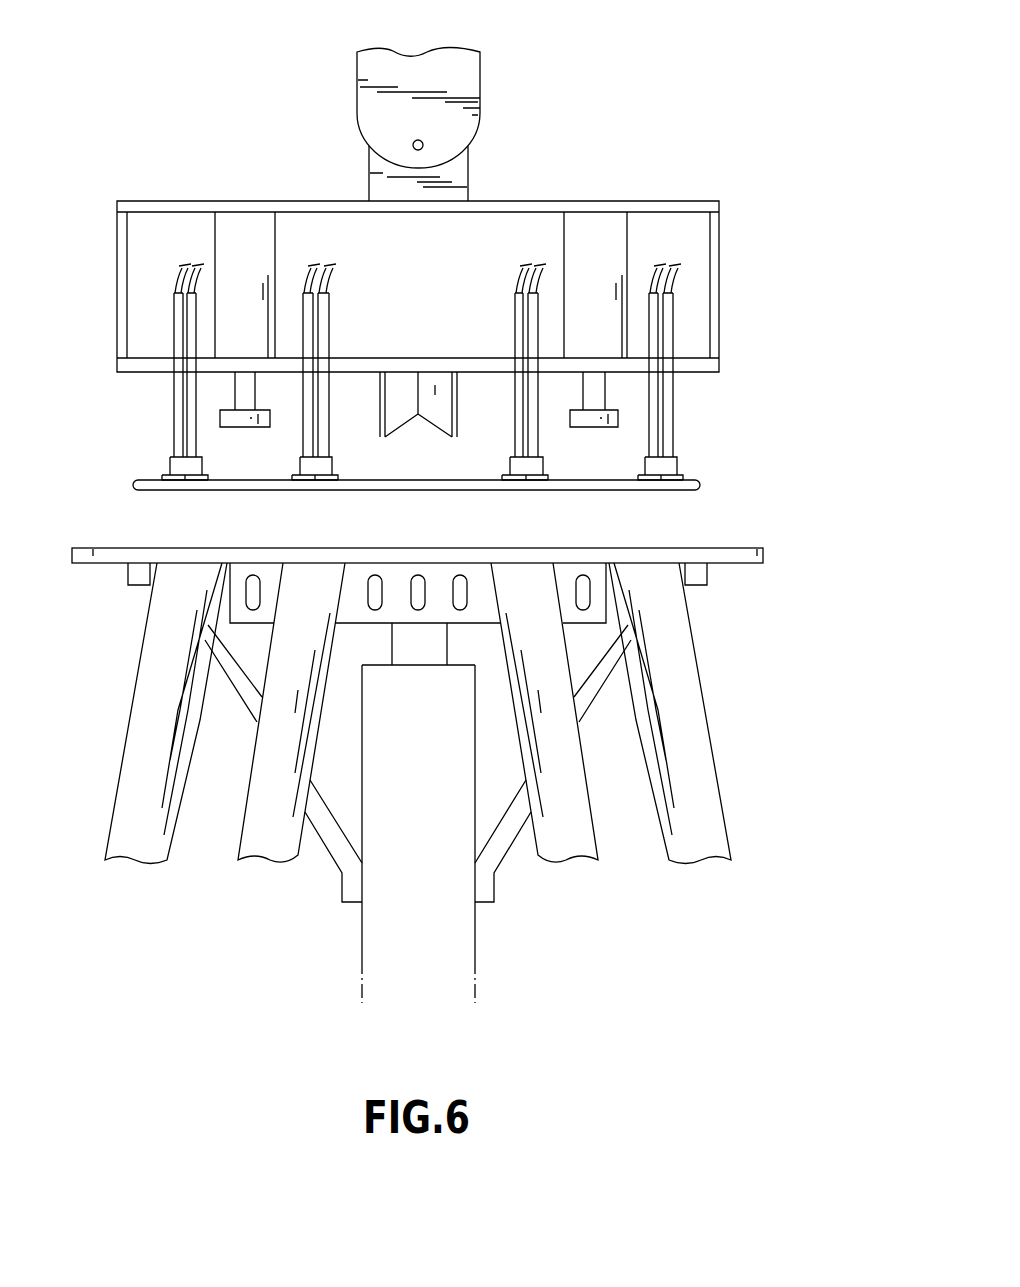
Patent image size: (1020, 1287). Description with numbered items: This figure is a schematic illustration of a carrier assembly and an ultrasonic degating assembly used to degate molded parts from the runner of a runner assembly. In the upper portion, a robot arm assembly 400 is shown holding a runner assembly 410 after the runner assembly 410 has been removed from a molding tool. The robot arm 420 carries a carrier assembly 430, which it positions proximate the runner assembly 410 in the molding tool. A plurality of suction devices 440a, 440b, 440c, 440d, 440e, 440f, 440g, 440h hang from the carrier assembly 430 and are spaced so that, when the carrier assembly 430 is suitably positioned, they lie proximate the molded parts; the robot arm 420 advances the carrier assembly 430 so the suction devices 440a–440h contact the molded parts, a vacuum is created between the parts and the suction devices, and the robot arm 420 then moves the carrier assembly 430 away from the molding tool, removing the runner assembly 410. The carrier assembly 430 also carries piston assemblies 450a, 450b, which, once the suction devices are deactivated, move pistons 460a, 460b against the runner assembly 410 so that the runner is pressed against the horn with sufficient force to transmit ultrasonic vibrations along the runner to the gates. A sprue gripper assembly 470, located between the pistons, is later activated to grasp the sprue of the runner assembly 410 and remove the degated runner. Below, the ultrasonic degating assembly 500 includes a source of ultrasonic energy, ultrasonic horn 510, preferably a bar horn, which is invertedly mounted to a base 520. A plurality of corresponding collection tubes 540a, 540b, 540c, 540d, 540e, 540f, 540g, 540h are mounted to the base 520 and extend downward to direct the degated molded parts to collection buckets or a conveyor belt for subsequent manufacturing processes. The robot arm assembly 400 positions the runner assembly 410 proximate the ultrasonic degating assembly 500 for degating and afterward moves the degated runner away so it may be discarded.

The robot arm assembly 400 is at (733, 166).
The runner assembly 410 is at (698, 486).
The robot arm 420 is at (471, 65).
The carrier assembly 430 is at (720, 303).
The suction device 440a is at (198, 466).
The suction device 440b is at (333, 467).
The suction device 440c is at (180, 468).
The suction device 440d is at (308, 467).
The suction device 440e is at (538, 465).
The suction device 440f is at (668, 466).
The suction device 440g is at (519, 470).
The suction device 440h is at (655, 468).
The piston assembly 450a is at (239, 224).
The piston assembly 450b is at (608, 230).
The piston 460a is at (232, 418).
The piston 460b is at (592, 420).
The sprue gripper assembly 470 is at (390, 418).
The ultrasonic degating assembly 500 is at (748, 686).
The ultrasonic horn 510 is at (595, 587).
The base 520 is at (763, 553).
The collection tube 540a is at (190, 782).
The collection tube 540b is at (318, 743).
The collection tube 540c is at (130, 853).
The collection tube 540d is at (300, 853).
The collection tube 540e is at (503, 812).
The collection tube 540f is at (643, 778).
The collection tube 540g is at (550, 850).
The collection tube 540h is at (692, 848).